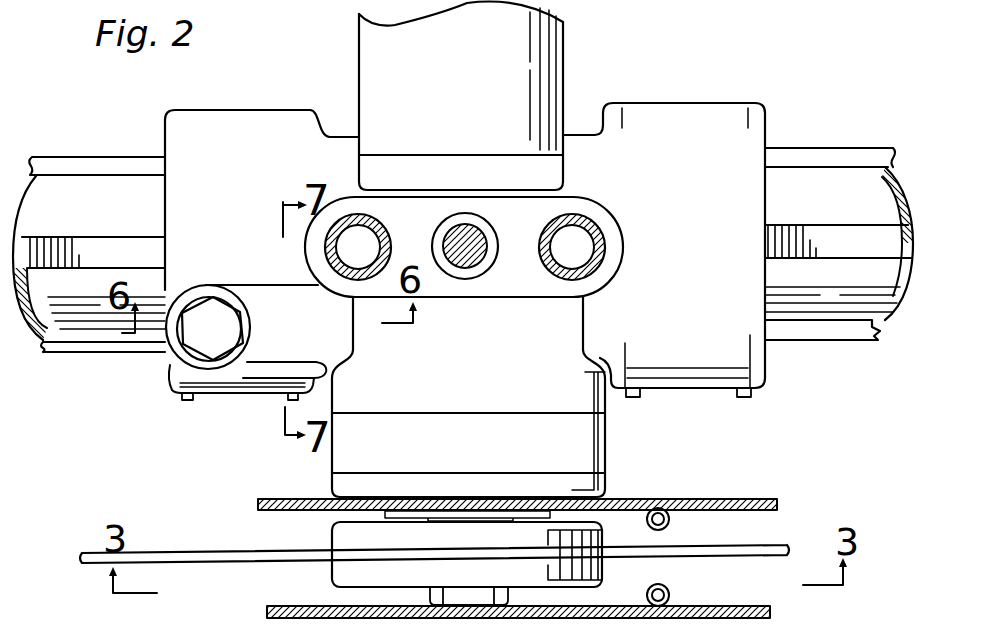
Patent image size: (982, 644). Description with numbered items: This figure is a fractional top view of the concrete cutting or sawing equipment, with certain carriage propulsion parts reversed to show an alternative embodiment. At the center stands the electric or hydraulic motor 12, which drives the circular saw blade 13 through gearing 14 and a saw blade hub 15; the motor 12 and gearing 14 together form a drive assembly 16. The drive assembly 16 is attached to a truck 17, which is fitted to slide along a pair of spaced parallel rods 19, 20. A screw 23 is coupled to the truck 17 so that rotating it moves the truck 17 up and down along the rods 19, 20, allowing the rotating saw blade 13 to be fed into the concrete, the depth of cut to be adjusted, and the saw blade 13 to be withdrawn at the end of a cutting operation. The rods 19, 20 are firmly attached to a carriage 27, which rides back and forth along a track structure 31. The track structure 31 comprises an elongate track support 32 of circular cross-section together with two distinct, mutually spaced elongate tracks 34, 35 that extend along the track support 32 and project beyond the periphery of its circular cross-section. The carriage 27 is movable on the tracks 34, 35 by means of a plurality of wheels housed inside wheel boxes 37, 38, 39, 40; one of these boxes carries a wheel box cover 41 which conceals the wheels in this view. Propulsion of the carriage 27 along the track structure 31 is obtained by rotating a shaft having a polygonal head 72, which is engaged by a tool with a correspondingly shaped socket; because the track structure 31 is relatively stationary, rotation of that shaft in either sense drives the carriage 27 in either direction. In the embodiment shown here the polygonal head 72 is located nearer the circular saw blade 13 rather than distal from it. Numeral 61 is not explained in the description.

The motor 12 is at (476, 124).
The circular saw blade 13 is at (755, 544).
The gearing 14 is at (606, 456).
The saw blade hub 15 is at (606, 543).
The drive assembly 16 is at (619, 414).
The truck 17 is at (590, 200).
The rod 19 is at (378, 232).
The rod 20 is at (594, 223).
The screw 23 is at (484, 230).
The carriage 27 is at (689, 313).
The track structure 31 is at (842, 328).
The elongate track support 32 is at (815, 187).
The track 34 is at (122, 346).
The track 35 is at (135, 157).
The wheel box 37 is at (174, 390).
The wheel box 38 is at (759, 382).
The wheel box 39 is at (233, 120).
The wheel box 40 is at (699, 83).
The wheel box cover 41 is at (238, 404).
The tube 61 is at (114, 222).
The polygonal head 72 is at (200, 345).